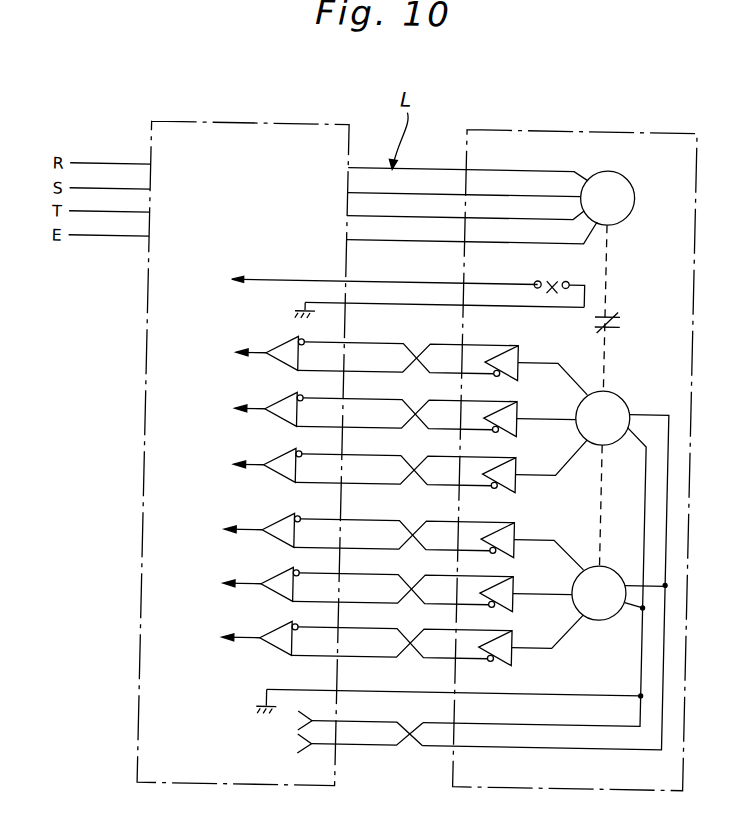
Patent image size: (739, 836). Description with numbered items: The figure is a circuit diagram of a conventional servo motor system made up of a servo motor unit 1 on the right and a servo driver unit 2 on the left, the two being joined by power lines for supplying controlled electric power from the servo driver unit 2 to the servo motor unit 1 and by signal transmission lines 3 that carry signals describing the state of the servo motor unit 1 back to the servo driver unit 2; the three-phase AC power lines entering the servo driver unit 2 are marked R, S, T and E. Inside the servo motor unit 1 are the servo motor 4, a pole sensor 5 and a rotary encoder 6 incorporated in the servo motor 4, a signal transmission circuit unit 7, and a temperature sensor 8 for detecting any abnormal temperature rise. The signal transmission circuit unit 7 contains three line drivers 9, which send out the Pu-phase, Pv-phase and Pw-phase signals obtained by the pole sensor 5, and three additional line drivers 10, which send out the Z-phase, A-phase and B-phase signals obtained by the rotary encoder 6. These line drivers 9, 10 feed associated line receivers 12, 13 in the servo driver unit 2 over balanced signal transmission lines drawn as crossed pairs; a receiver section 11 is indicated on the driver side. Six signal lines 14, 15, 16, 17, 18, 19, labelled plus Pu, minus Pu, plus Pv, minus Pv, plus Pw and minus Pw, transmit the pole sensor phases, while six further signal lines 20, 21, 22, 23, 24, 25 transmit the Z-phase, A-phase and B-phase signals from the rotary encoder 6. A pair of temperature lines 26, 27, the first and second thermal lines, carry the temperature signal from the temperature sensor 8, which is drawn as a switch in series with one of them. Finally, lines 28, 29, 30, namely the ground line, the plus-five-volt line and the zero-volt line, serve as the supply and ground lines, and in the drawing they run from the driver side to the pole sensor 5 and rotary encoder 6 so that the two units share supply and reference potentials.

The servo motor unit 1 is at (557, 129).
The servo driver unit 2 is at (258, 126).
The signal transmission lines 3 is at (404, 271).
The servo motor 4 is at (629, 195).
The pole sensor 5 is at (620, 395).
The rotary encoder 6 is at (615, 566).
The signal transmission circuit unit 7 is at (483, 344).
The temperature sensor 8 is at (550, 278).
The line drivers 9 is at (519, 344).
The line drivers 10 is at (518, 521).
The line receiver section 11 is at (254, 343).
The line receivers 12 is at (302, 343).
The line receivers 13 is at (302, 520).
The signal line 14 is at (443, 344).
The signal line 15 is at (408, 358).
The signal line 16 is at (397, 402).
The signal line 17 is at (406, 414).
The signal line 18 is at (396, 458).
The signal line 19 is at (405, 470).
The signal line 20 is at (442, 521).
The signal line 21 is at (404, 535).
The signal line 22 is at (394, 577).
The signal line 23 is at (403, 589).
The signal line 24 is at (392, 631).
The signal line 25 is at (401, 643).
The TH1 line 26 is at (435, 282).
The TH2 line 27 is at (400, 304).
The GND line 28 is at (422, 748).
The +5V line 29 is at (425, 723).
The 0V line 30 is at (406, 692).